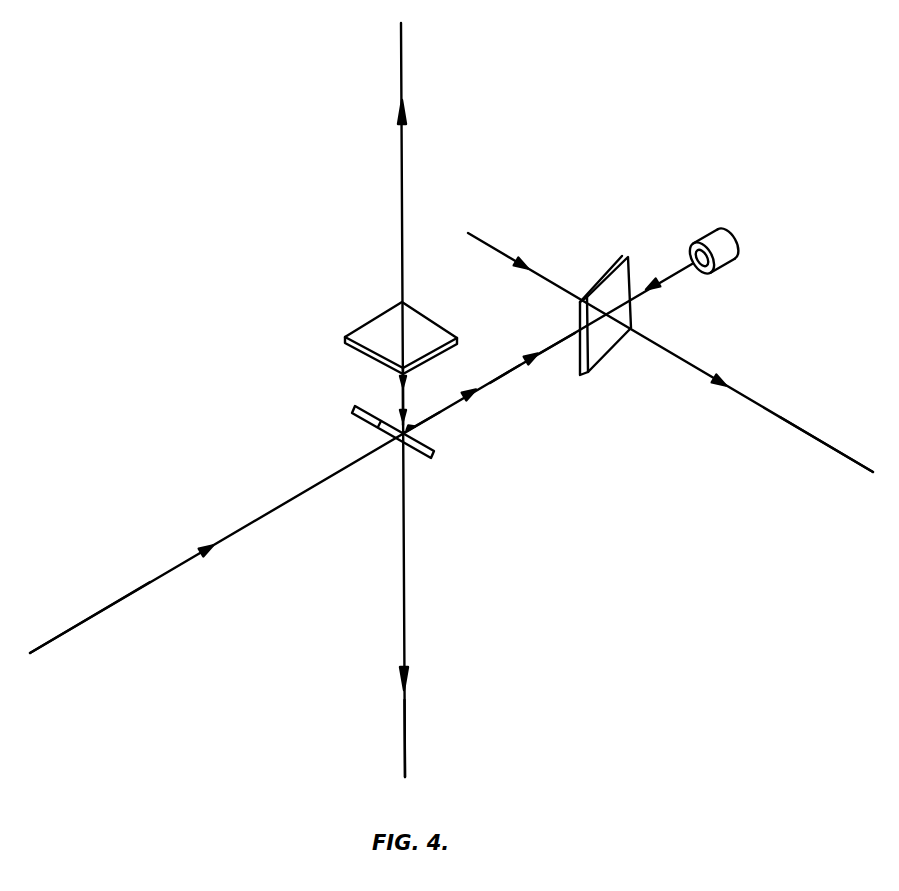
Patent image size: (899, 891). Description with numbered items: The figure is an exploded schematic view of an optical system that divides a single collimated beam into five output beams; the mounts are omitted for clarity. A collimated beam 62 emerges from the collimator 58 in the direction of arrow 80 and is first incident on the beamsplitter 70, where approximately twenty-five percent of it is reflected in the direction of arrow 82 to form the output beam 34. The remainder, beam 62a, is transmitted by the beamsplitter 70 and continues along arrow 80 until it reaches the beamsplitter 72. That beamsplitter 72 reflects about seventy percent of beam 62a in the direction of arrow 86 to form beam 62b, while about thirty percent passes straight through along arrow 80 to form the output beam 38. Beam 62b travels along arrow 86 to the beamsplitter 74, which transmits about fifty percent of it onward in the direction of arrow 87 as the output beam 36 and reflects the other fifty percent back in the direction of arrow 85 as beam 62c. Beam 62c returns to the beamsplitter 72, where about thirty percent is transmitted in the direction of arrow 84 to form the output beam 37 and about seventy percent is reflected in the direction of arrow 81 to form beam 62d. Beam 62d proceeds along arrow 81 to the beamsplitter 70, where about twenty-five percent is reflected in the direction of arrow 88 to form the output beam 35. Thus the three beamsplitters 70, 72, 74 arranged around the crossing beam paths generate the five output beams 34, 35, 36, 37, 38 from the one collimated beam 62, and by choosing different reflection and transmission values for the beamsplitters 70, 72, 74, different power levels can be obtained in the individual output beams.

The output beam 34 is at (811, 436).
The output beam 35 is at (492, 243).
The output beam 36 is at (402, 45).
The output beam 37 is at (407, 762).
The output beam 38 is at (88, 619).
The collimator 58 is at (731, 243).
The collimated beam 62 is at (670, 280).
The beam 62a is at (556, 340).
The beam 62b is at (414, 428).
The beam 62c is at (405, 391).
The beam 62d is at (506, 376).
The beamsplitter 70 is at (598, 346).
The beamsplitter 72 is at (432, 459).
The beamsplitter 74 is at (366, 319).
The arrow 80 is at (214, 549).
The arrow 81 is at (476, 394).
The arrow 82 is at (736, 386).
The arrow 84 is at (408, 678).
The arrow 85 is at (400, 383).
The arrow 86 is at (400, 413).
The arrow 87 is at (404, 118).
The arrow 88 is at (530, 264).